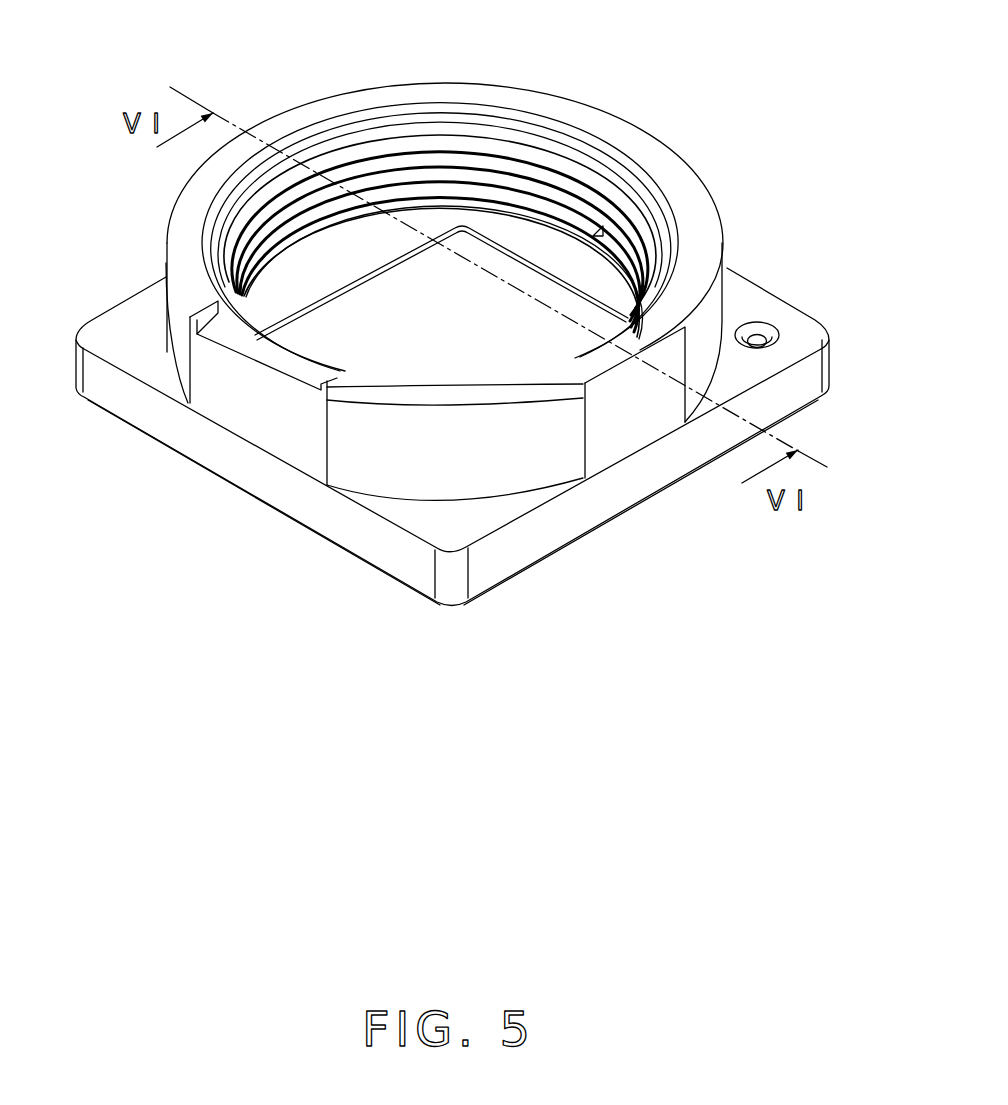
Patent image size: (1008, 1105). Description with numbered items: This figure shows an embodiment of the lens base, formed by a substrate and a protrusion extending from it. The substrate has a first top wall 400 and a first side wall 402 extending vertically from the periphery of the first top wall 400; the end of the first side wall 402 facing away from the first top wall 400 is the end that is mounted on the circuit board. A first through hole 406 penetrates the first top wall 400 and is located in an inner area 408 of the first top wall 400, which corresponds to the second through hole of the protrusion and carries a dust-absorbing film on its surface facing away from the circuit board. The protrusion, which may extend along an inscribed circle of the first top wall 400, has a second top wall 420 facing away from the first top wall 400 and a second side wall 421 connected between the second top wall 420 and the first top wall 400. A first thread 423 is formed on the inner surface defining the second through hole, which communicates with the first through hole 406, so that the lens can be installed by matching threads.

The first top wall 400 is at (479, 467).
The first side wall 402 is at (132, 395).
The first through hole 406 is at (333, 330).
The inner area 408 is at (300, 285).
The second top wall 420 is at (337, 107).
The second side wall 421 is at (672, 353).
The first thread 423 is at (498, 150).